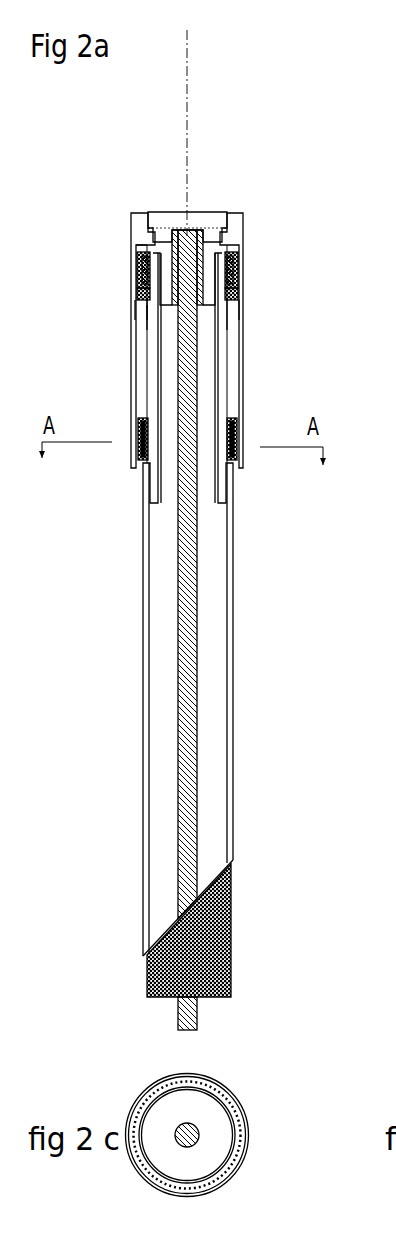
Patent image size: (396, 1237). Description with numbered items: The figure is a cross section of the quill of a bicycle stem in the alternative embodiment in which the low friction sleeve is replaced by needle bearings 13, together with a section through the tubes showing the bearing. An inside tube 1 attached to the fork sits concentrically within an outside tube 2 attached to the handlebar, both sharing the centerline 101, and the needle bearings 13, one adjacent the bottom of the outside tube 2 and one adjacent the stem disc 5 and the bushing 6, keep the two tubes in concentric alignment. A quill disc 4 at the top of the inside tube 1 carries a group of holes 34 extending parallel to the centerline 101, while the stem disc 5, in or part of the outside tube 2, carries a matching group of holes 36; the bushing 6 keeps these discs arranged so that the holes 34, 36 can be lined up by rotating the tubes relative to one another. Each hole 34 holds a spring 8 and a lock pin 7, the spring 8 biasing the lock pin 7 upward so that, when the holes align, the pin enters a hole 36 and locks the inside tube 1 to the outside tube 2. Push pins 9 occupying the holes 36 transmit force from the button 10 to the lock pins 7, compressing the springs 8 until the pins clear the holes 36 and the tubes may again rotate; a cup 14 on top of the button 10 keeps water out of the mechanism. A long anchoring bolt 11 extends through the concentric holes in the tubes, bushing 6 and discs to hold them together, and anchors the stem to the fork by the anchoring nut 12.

In FIG. 2a, the centerline 101 is at (187, 47).
In FIG. 2a, the cup 14 is at (184, 214).
In FIG. 2a, the button 10 is at (395, 202).
In FIG. 2a, the bushing 6 is at (212, 243).
In FIG. 2a, the stem disc 5 is at (230, 262).
In FIG. 2a, the push pin 9 is at (395, 295).
In FIG. 2a, the lock pin 7 is at (235, 288).
In FIG. 2a, the spring 8 is at (395, 368).
In FIG. 2a, the quill disc 4 is at (224, 333).
In FIG. 2c, the quill disc 4 is at (181, 1128).
In FIG. 2a, the holes 36 is at (138, 267).
In FIG. 2a, the needle bearing 13 is at (136, 282).
In FIG. 2c, the needle bearing 13 is at (234, 1086).
In FIG. 2a, the holes 34 is at (150, 317).
In FIG. 2a, the inside tube 1 is at (148, 793).
In FIG. 2a, the anchoring bolt 11 is at (190, 810).
In FIG. 2a, the anchoring nut 12 is at (208, 980).
In FIG. 2c, the outside tube 2 is at (243, 1122).